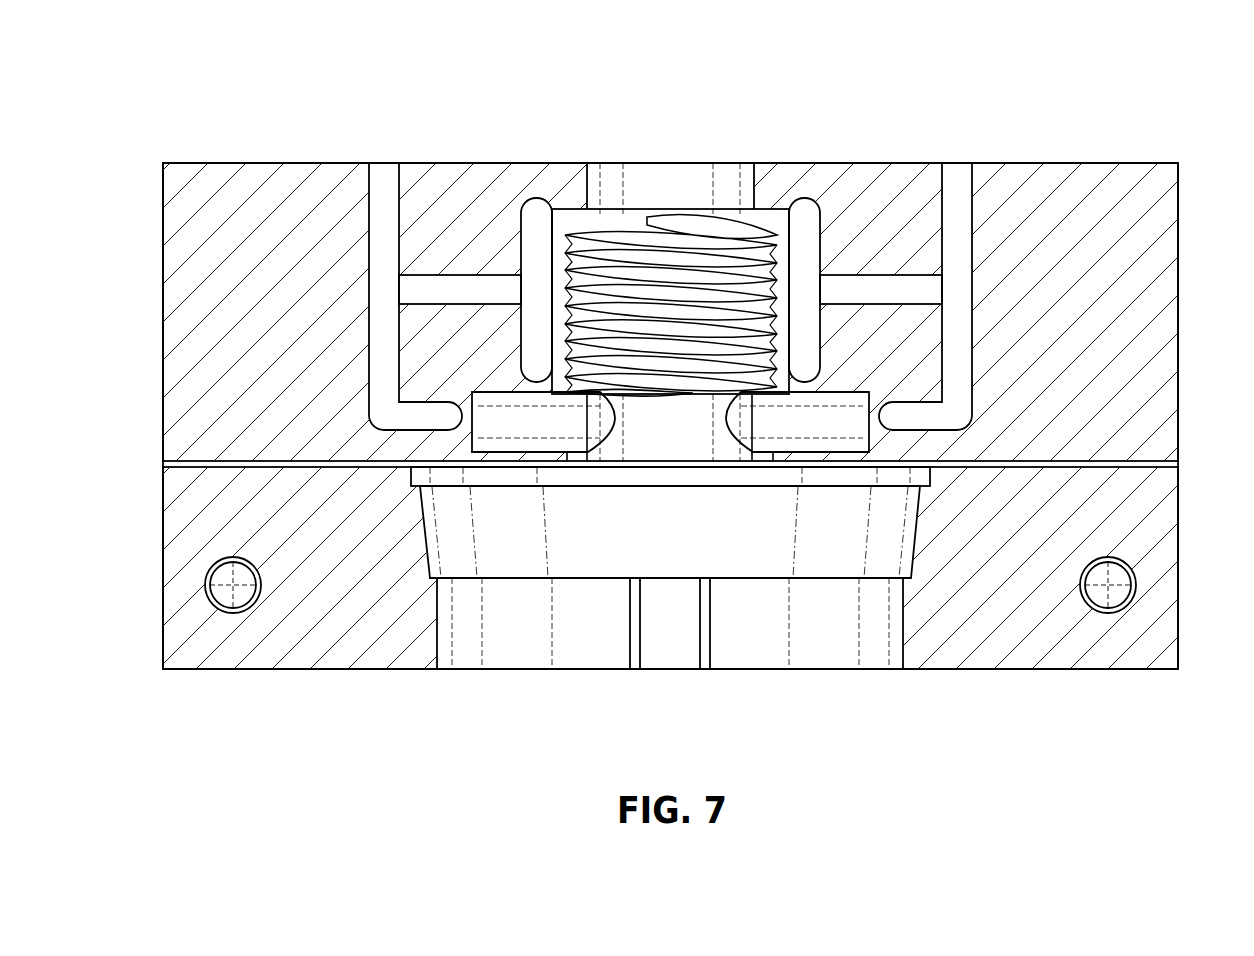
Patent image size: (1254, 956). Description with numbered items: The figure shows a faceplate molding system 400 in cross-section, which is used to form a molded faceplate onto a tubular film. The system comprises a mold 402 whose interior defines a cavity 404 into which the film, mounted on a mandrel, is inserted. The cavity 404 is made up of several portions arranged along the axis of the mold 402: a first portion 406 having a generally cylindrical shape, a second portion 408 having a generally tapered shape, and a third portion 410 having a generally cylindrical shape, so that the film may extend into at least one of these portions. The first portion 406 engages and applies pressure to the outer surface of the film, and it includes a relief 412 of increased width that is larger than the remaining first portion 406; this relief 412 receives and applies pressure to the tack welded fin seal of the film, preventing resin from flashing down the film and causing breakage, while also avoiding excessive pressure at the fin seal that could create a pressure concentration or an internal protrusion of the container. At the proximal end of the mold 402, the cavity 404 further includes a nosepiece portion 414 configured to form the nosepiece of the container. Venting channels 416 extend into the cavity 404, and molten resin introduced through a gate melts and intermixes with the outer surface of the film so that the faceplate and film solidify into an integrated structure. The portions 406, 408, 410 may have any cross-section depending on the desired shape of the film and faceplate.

The faceplate molding system 400 is at (1040, 92).
The mold 402 is at (1160, 366).
The cavity 404 is at (874, 690).
The first portion 406 is at (515, 658).
The second portion 408 is at (440, 538).
The third portion 410 is at (410, 473).
The relief 412 is at (671, 658).
The nosepiece portion 414 is at (702, 210).
The venting channels 416 is at (375, 388).